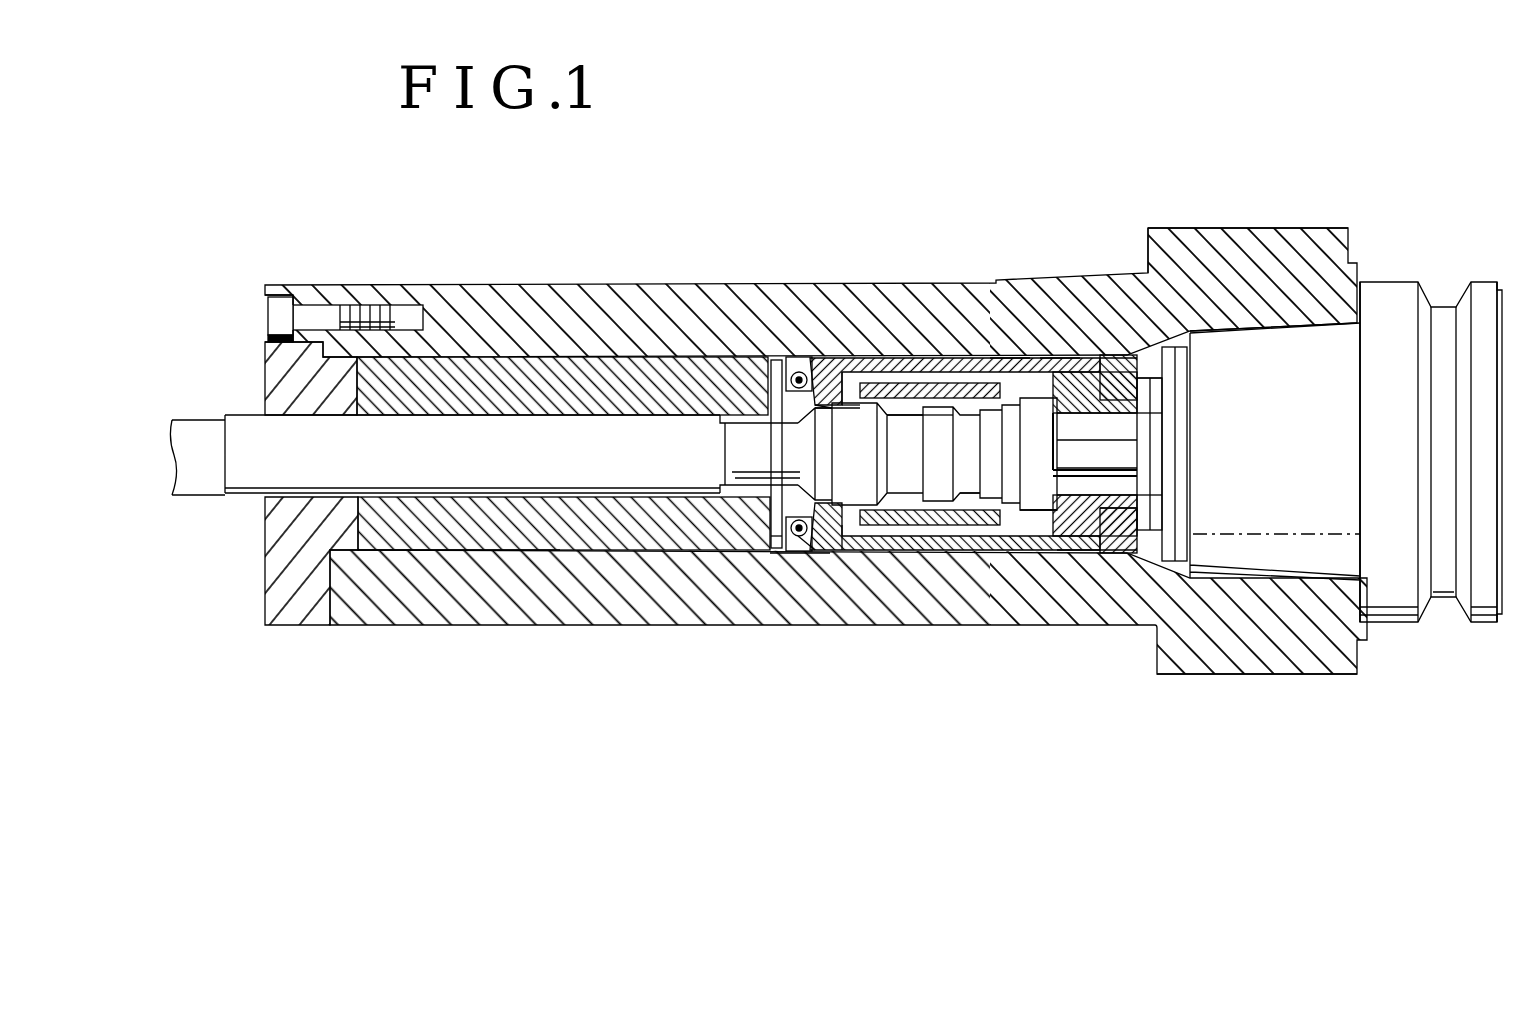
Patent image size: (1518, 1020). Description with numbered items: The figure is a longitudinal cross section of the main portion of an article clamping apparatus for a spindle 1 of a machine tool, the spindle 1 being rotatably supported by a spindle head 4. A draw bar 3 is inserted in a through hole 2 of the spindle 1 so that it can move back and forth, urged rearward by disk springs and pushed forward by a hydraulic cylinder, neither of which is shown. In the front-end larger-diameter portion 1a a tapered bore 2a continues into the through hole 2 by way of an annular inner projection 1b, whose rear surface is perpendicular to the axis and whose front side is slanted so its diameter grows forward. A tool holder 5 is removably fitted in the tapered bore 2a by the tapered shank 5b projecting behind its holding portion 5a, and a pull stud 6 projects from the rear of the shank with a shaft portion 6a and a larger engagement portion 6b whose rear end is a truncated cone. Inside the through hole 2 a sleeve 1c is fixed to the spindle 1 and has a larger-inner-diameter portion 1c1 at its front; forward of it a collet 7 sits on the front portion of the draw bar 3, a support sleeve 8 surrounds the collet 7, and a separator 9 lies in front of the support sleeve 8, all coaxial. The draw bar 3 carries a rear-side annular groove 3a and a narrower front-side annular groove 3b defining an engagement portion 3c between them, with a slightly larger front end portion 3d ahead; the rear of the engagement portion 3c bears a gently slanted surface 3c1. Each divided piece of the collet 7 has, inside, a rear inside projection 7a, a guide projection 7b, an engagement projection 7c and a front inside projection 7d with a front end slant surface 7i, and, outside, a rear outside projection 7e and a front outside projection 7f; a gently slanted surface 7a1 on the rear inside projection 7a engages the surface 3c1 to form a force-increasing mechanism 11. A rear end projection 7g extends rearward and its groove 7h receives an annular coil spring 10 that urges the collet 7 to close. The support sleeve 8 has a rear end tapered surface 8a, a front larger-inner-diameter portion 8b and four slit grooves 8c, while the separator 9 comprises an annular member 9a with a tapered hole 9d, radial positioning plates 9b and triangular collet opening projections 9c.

The spindle 1 is at (510, 281).
The front-end larger-diameter portion 1a is at (1327, 243).
The annular inner projection 1b is at (1128, 300).
The sleeve 1c is at (447, 537).
The larger-inner-diameter portion 1c1 is at (800, 555).
The through hole 2 is at (720, 360).
The tapered bore 2a is at (1278, 332).
The draw bar 3 is at (413, 432).
The rear-side annular groove 3a is at (745, 500).
The front-side annular groove 3b is at (940, 545).
The engagement portion 3c is at (898, 545).
The gently slanted surface 3c1 is at (847, 408).
The front end portion 3d is at (975, 545).
The spindle head 4 is at (1233, 674).
The tool holder 5 is at (1388, 305).
The holding portion 5a is at (1497, 630).
The tapered shank 5b is at (1325, 560).
The pull stud 6 is at (1116, 450).
The shaft portion 6a is at (1125, 432).
The engagement portion 6b is at (1033, 560).
The collet 7 is at (930, 372).
The rear inside projection 7a is at (862, 392).
The gently slanted surface 7a1 is at (822, 406).
The guide projection 7b is at (1010, 365).
The engagement projection 7c is at (1052, 365).
The front inside projection 7d is at (1103, 365).
The rear outside projection 7e is at (797, 540).
The front outside projection 7f is at (1078, 565).
The rear end projection 7g is at (763, 473).
The groove 7h is at (778, 535).
The front end slant surface 7i is at (1068, 437).
The support sleeve 8 is at (958, 390).
The rear end tapered surface 8a is at (842, 540).
The larger-inner-diameter portion 8b is at (1120, 560).
The slit grooves 8c is at (1048, 560).
The separator 9 is at (1160, 340).
The annular member 9a is at (1150, 385).
The positioning plates 9b is at (1100, 620).
The collet opening projections 9c is at (1150, 410).
The tapered hole 9d is at (1150, 498).
The annular coil spring 10 is at (797, 370).
The force-increasing mechanism 11 is at (812, 145).